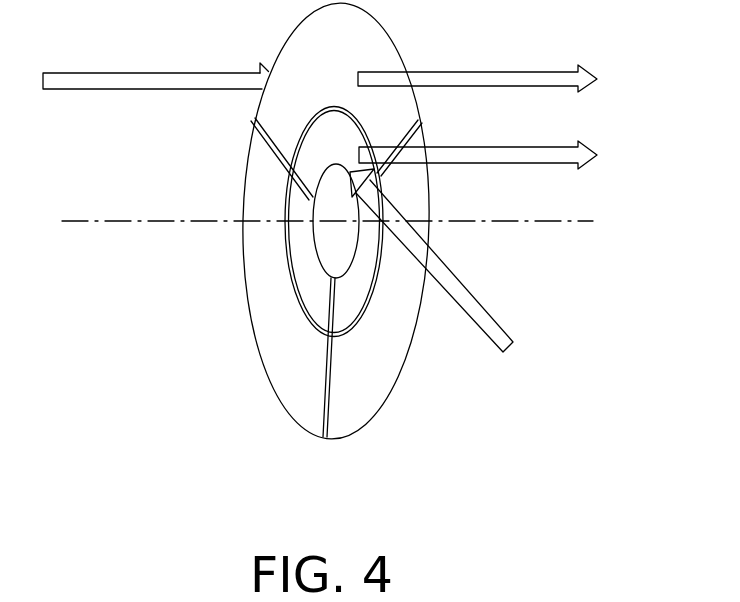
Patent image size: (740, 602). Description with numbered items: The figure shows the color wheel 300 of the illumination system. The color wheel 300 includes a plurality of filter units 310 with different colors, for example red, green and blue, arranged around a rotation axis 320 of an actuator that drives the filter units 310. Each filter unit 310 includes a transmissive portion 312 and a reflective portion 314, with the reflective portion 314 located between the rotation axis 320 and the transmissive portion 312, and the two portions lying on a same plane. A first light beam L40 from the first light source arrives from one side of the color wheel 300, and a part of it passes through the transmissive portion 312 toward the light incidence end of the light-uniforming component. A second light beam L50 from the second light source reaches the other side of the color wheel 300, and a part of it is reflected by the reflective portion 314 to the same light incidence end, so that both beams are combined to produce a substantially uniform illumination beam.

The color wheel 300 is at (357, 255).
The filter unit 310 is at (361, 255).
The transmissive portion 312 is at (402, 352).
The reflective portion 314 is at (348, 300).
The rotation axis 320 is at (562, 221).
The first light beam L40 is at (108, 80).
The second light beam L50 is at (499, 322).